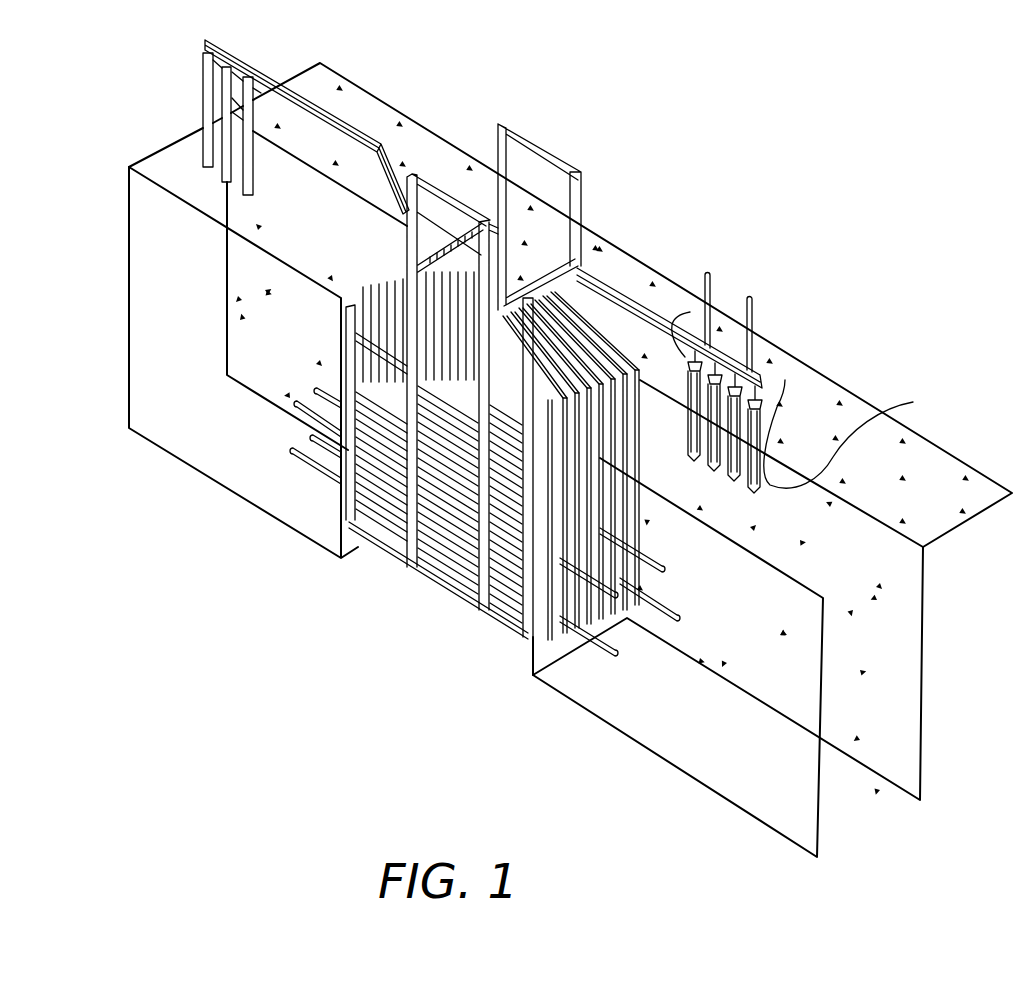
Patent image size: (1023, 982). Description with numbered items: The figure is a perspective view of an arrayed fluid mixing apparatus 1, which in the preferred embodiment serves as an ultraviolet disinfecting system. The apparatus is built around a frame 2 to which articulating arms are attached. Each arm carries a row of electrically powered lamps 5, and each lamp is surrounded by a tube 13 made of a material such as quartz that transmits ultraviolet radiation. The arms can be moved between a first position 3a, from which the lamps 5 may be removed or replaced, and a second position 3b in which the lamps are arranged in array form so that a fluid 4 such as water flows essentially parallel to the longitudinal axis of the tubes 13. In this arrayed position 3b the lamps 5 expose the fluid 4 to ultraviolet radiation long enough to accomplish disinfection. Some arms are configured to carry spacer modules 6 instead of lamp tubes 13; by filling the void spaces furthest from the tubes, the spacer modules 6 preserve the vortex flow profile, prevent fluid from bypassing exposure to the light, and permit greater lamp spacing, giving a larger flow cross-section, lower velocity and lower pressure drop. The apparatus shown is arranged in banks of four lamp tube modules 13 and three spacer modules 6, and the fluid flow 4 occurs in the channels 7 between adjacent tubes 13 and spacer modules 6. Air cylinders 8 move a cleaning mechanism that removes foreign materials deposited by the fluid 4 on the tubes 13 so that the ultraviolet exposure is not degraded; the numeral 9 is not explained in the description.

The arrayed fluid mixing apparatus 1 is at (485, 441).
The frame 2 is at (538, 140).
The first position 3a is at (610, 292).
The second position 3b is at (548, 637).
The fluid 4 is at (570, 460).
The electrically powered lamps 5 is at (767, 396).
The spacer modules 6 is at (197, 107).
The channels 7 is at (385, 499).
The air cylinders 8 is at (756, 313).
The nozzles 9 is at (668, 355).
The tube 13 is at (857, 434).